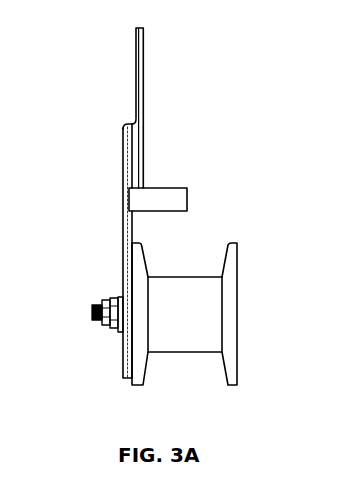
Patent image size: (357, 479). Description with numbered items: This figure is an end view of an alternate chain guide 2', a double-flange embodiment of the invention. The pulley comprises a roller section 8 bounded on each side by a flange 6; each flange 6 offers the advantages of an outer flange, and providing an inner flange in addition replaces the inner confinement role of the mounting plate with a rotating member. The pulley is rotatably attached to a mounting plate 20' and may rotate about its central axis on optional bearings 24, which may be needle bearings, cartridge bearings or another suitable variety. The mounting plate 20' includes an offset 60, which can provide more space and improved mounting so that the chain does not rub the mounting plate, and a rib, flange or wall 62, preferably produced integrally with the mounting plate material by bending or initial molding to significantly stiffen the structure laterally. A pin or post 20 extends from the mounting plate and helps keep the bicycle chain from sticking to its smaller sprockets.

The chain guide 2' is at (69, 19).
The mounting plate 20' is at (173, 108).
The offset 60 is at (126, 113).
The rib, flange or wall 62 is at (143, 152).
The pin or post 20 is at (164, 214).
The roller section 8 is at (196, 276).
The flange 6 is at (140, 382).
The bearings 24 is at (130, 355).